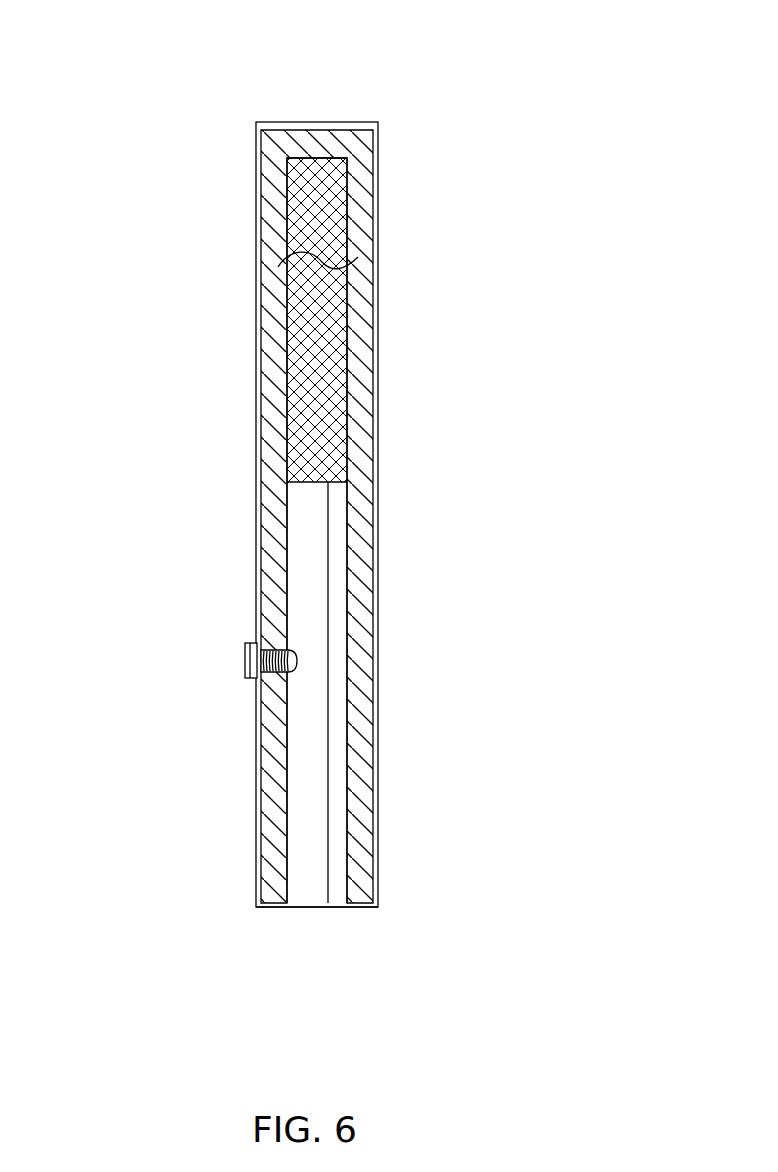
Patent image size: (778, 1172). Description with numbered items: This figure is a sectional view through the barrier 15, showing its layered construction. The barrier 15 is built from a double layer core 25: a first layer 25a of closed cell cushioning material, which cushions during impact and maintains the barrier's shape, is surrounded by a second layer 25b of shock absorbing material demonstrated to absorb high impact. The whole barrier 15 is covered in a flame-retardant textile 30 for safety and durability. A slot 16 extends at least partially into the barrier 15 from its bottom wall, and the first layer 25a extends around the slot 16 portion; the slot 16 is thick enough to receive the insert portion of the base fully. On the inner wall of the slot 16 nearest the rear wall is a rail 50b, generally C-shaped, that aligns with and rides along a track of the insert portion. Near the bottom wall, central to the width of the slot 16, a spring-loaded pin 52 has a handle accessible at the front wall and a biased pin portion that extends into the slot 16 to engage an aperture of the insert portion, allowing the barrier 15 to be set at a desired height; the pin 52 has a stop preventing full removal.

The barrier 15 is at (133, 410).
The slot 16 is at (315, 690).
The double layer core 25 is at (318, 253).
The first layer 25a is at (345, 322).
The second layer 25b is at (357, 212).
The flame-retardant textile 30 is at (378, 124).
The rail 50b is at (337, 567).
The spring-loaded pin 52 is at (245, 648).